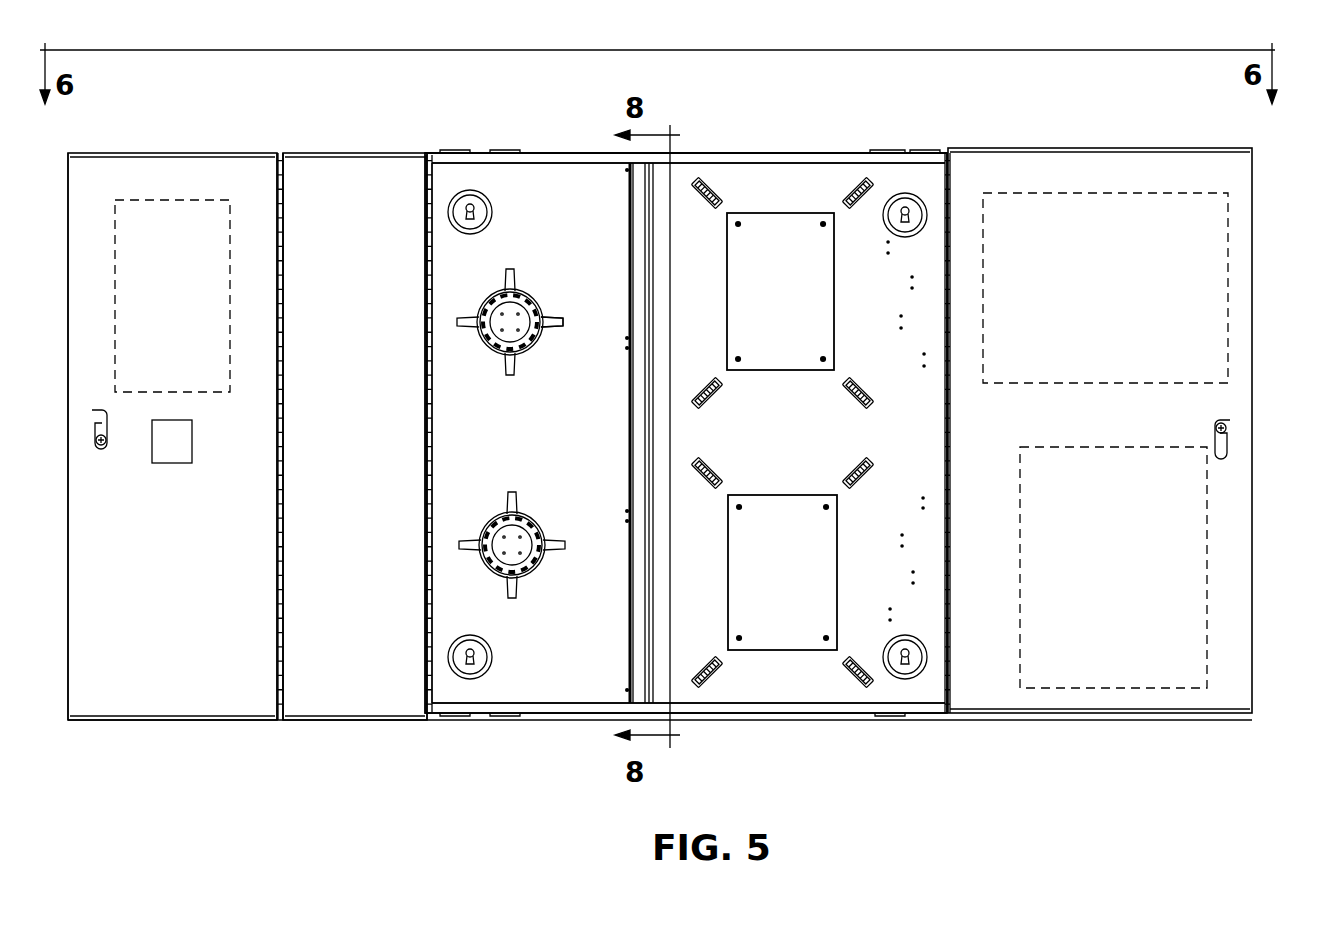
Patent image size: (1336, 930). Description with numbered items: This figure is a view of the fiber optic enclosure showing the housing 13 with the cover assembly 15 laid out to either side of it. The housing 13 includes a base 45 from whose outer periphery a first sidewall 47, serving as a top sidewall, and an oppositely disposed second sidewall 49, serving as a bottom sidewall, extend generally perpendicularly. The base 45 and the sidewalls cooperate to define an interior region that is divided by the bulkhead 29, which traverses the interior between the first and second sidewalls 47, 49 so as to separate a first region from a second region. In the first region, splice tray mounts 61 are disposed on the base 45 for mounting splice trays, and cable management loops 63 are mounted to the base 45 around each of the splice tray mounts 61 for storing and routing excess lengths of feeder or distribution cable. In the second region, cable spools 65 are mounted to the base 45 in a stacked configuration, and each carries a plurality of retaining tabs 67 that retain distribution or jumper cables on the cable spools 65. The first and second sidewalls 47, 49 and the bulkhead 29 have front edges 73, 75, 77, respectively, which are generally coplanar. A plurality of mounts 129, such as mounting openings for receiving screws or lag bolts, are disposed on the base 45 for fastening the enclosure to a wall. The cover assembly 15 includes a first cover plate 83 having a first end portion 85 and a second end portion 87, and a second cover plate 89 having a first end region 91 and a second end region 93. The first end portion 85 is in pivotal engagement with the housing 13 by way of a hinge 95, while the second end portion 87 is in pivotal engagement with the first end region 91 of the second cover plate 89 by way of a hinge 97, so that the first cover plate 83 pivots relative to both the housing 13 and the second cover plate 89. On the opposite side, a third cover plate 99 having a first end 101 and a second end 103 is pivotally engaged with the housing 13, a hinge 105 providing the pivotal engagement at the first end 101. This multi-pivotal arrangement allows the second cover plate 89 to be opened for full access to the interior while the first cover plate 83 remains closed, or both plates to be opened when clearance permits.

The housing 13 is at (842, 145).
The cover assembly 15 is at (268, 764).
The bulkhead 29 is at (640, 630).
The base 45 is at (583, 452).
The first sidewall 47 is at (557, 152).
The second sidewall 49 is at (780, 718).
The splice tray mounts 61 is at (795, 288).
The cable management loops 63 is at (850, 193).
The cable spools 65 is at (495, 355).
The retaining tabs 67 is at (553, 325).
The front edge of first sidewall 73 is at (537, 163).
The front edge of second sidewall 75 is at (525, 713).
The front edge of bulkhead 77 is at (645, 588).
The first cover plate 83 is at (324, 150).
The first end portion 85 is at (412, 700).
The second end portion 87 is at (298, 700).
The second cover plate 89 is at (196, 150).
The first end region 91 is at (258, 700).
The second end region 93 is at (80, 705).
The hinge 95 is at (425, 428).
The hinge 97 is at (283, 556).
The third cover plate 99 is at (1076, 148).
The first end 101 is at (1012, 215).
The second end 103 is at (1200, 215).
The hinge 105 is at (950, 425).
The mounts 129 is at (492, 212).